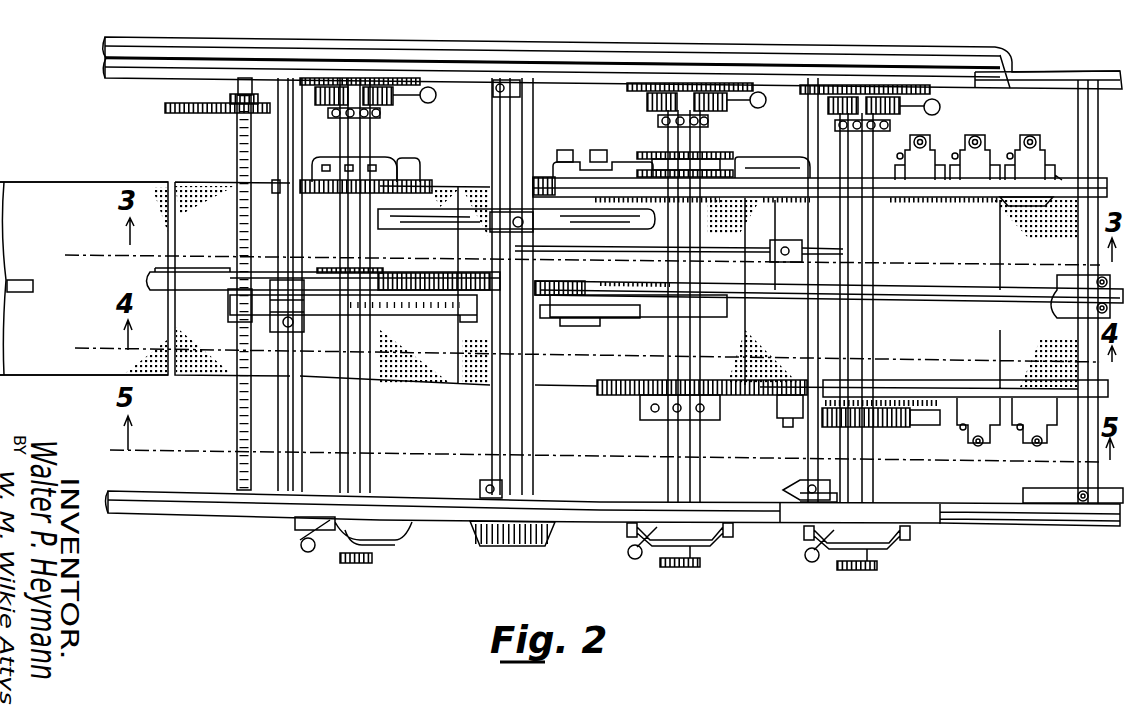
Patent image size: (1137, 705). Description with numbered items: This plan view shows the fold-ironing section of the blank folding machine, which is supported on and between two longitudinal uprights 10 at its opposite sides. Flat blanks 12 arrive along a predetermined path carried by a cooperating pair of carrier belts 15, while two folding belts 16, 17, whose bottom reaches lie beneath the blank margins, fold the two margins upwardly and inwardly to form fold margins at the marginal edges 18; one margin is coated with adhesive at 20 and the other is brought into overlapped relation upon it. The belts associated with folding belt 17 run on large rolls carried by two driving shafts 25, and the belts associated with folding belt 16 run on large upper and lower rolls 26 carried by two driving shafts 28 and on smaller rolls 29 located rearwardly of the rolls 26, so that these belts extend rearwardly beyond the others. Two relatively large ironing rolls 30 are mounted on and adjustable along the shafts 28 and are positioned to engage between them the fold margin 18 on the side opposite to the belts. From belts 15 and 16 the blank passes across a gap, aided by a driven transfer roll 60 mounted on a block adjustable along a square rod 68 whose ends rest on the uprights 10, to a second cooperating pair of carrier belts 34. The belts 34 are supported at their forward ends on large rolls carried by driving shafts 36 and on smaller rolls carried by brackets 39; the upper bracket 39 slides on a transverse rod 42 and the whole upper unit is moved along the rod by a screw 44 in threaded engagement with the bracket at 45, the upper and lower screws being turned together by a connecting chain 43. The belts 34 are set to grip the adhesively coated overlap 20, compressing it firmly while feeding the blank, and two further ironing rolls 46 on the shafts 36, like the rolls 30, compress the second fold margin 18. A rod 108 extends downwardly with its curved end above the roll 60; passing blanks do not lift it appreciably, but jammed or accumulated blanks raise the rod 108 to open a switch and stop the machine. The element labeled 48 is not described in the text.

The uprights 10 is at (527, 75).
The flat blanks 12 is at (30, 200).
The carrier belts 15 is at (965, 292).
The folding belt 16 is at (878, 190).
The folding belt 17 is at (905, 385).
The marginal edges 18 is at (105, 183).
The adhesive coating 20 is at (30, 272).
The driving shafts 25 is at (873, 453).
The large rolls 26 is at (632, 199).
The driving shafts 28 is at (698, 446).
The smaller rolls 29 is at (540, 178).
The ironing rolls 30 is at (635, 385).
The carrier belts 34 is at (410, 272).
The driving shafts 36 is at (372, 408).
The brackets 39 is at (425, 318).
The transverse rod 42 is at (290, 416).
The connecting chain 43 is at (200, 110).
The screw 44 is at (238, 229).
The threaded engagement 45 is at (228, 310).
The ironing rolls 46 is at (420, 183).
The bracket 48 is at (802, 198).
The transfer roll 60 is at (532, 405).
The square rod 68 is at (490, 443).
The rod 108 is at (772, 250).